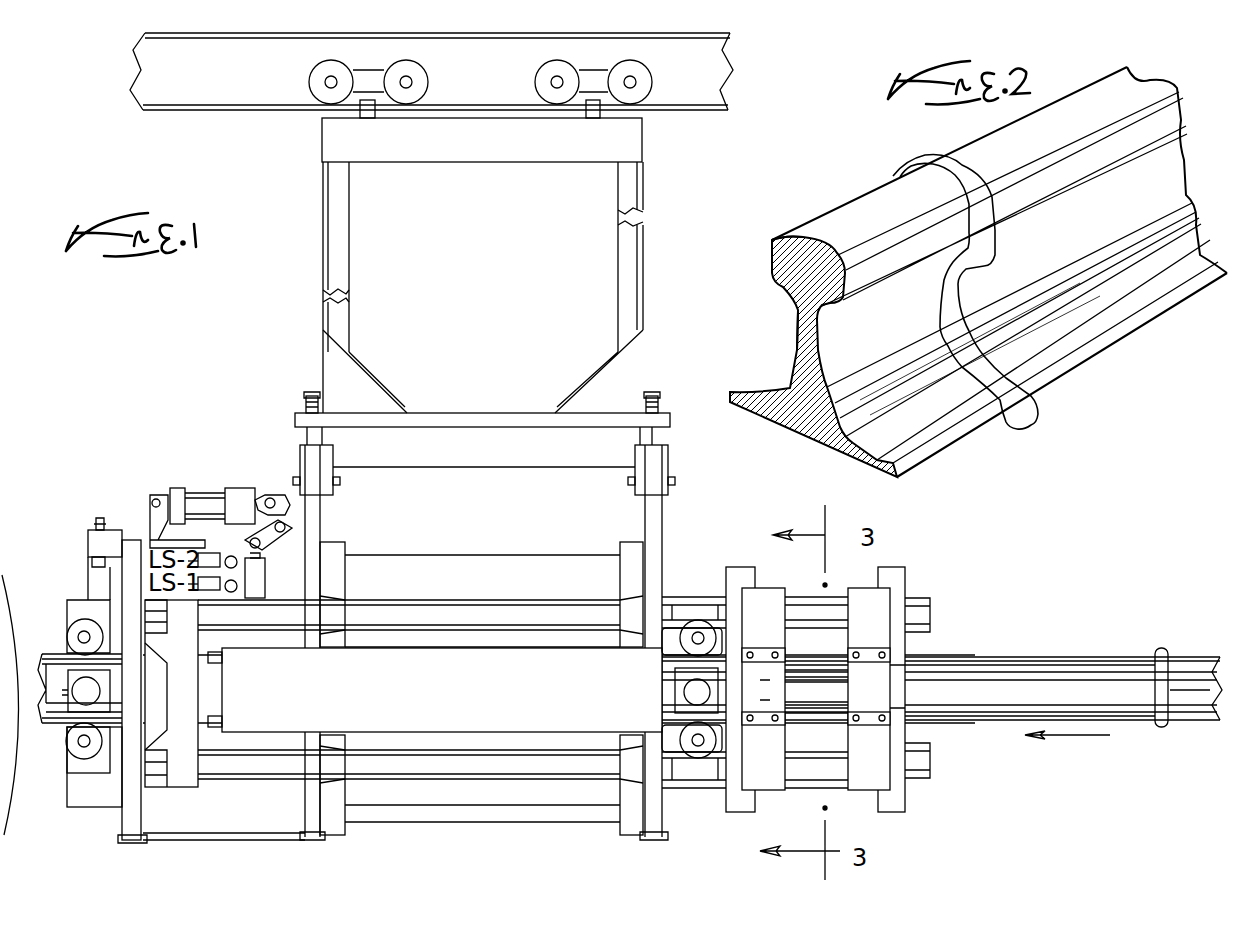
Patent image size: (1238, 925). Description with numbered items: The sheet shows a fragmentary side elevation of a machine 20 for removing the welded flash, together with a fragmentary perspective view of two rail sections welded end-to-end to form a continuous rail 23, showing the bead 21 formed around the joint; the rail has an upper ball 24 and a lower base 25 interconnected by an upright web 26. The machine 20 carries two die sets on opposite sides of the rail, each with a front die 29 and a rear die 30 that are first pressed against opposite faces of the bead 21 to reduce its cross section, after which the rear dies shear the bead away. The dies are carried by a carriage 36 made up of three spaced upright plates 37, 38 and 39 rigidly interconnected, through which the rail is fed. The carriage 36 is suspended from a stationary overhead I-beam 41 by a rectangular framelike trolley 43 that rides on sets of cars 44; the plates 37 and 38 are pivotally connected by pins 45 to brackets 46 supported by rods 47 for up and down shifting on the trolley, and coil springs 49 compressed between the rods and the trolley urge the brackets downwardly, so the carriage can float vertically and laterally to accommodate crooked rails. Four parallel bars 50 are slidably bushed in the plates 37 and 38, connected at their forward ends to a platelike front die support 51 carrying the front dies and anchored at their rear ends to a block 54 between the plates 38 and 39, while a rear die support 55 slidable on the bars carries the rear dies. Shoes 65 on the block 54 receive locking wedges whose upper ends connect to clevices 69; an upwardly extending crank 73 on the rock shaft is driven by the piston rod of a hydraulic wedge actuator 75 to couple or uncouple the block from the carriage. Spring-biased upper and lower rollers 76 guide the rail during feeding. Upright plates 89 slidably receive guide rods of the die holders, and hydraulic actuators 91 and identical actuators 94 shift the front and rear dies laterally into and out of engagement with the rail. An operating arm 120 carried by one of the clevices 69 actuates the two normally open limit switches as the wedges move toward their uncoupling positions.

In FIG. 1, the machine 20 is at (290, 363).
In FIG. 1, the bead 21 is at (1176, 663).
In FIG. 2, the bead 21 is at (923, 149).
In FIG. 1, the rail 23 is at (1058, 655).
In FIG. 2, the rail 23 is at (1183, 85).
In FIG. 1, the upper ball 24 is at (1105, 665).
In FIG. 2, the upper ball 24 is at (797, 241).
In FIG. 1, the lower base 25 is at (1130, 720).
In FIG. 2, the lower base 25 is at (806, 426).
In FIG. 1, the upright web 26 is at (1193, 697).
In FIG. 2, the upright web 26 is at (799, 316).
In FIG. 1, the front die 29 is at (838, 704).
In FIG. 1, the rear die 30 is at (802, 668).
In FIG. 1, the carriage 36 is at (317, 850).
In FIG. 1, the upright plate 37 is at (652, 826).
In FIG. 1, the upright plate 38 is at (318, 540).
In FIG. 1, the upright plate 39 is at (132, 540).
In FIG. 1, the overhead I-beam 41 is at (257, 100).
In FIG. 1, the trolley 43 is at (313, 298).
In FIG. 1, the cars 44 is at (342, 66).
In FIG. 1, the pins 45 is at (340, 482).
In FIG. 1, the brackets 46 is at (333, 462).
In FIG. 1, the rods 47 is at (308, 437).
In FIG. 1, the coil springs 49 is at (310, 398).
In FIG. 1, the parallel bars 50 is at (473, 606).
In FIG. 1, the front die support 51 is at (900, 578).
In FIG. 1, the block 54 is at (186, 774).
In FIG. 1, the rear die support 55 is at (736, 567).
In FIG. 1, the shoes 65 is at (213, 688).
In FIG. 1, the clevices 69 is at (266, 578).
In FIG. 1, the crank 73 is at (280, 503).
In FIG. 1, the wedge actuator 75 is at (205, 490).
In FIG. 1, the upper and lower rollers 76 is at (76, 619).
In FIG. 1, the upright plates 89 is at (770, 593).
In FIG. 1, the hydraulic actuators 91 is at (895, 672).
In FIG. 1, the actuators 94 is at (769, 722).
In FIG. 1, the operating arm 120 is at (248, 535).